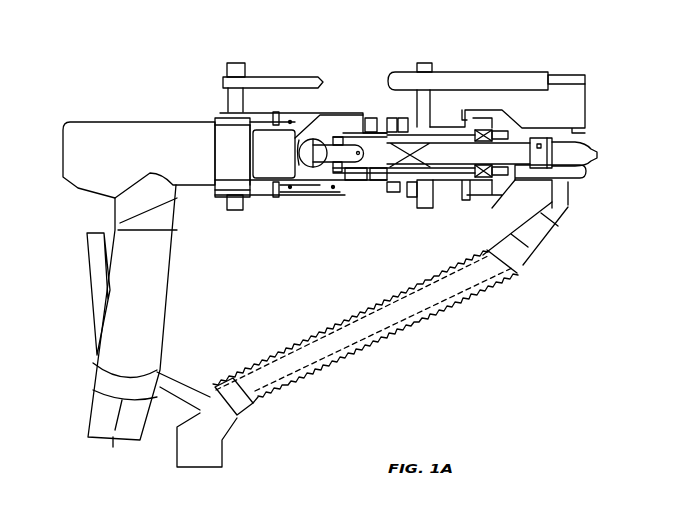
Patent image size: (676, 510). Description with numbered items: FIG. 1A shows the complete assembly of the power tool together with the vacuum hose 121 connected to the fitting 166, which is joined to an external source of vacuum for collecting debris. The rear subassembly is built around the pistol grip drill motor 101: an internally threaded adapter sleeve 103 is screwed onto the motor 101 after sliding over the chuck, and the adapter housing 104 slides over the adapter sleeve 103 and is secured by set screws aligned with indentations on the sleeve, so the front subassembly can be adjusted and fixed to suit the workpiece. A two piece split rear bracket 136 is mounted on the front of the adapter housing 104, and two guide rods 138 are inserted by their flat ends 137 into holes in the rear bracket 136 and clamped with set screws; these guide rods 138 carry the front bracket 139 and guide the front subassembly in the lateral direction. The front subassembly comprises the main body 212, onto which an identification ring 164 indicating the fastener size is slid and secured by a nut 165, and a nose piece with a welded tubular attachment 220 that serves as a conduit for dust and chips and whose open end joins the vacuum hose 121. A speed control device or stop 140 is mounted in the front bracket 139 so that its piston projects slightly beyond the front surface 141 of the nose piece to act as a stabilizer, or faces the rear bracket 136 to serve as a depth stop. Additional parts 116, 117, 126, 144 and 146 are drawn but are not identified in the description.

The drill motor 101 is at (110, 121).
The adapter sleeve 103 is at (217, 202).
The adapter housing 104 is at (320, 190).
The bearing 116 is at (473, 193).
The lower housing 117 is at (502, 202).
The vacuum hose 121 is at (457, 305).
The pin 126 is at (275, 197).
The rear bracket 136 is at (237, 210).
The flat end 137 is at (230, 63).
The guide rods 138 is at (262, 76).
The front bracket 139 is at (417, 207).
The speed control device 140 is at (472, 70).
The front surface 141 is at (587, 98).
The fitting 144 is at (589, 178).
The spacer 146 is at (342, 187).
The identification ring 164 is at (403, 119).
The nut 165 is at (388, 117).
The fitting 166 is at (224, 457).
The main body 212 is at (453, 181).
The tubular attachment 220 is at (542, 242).